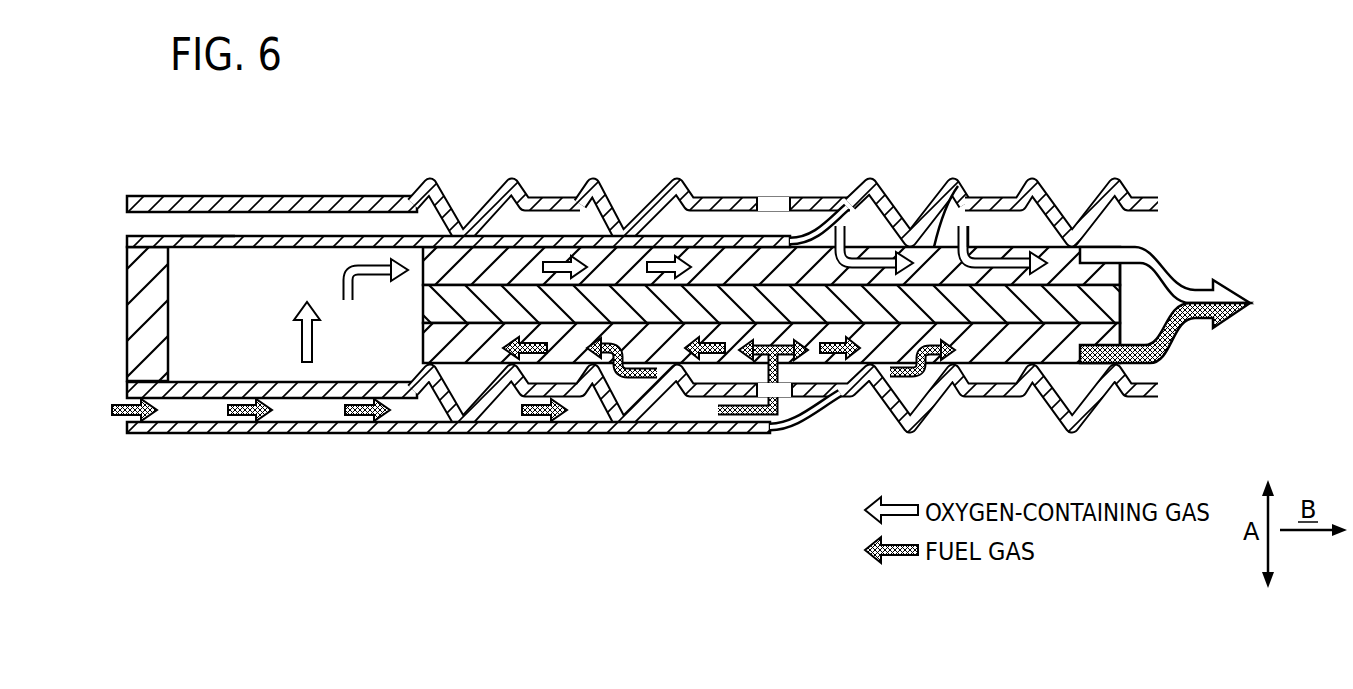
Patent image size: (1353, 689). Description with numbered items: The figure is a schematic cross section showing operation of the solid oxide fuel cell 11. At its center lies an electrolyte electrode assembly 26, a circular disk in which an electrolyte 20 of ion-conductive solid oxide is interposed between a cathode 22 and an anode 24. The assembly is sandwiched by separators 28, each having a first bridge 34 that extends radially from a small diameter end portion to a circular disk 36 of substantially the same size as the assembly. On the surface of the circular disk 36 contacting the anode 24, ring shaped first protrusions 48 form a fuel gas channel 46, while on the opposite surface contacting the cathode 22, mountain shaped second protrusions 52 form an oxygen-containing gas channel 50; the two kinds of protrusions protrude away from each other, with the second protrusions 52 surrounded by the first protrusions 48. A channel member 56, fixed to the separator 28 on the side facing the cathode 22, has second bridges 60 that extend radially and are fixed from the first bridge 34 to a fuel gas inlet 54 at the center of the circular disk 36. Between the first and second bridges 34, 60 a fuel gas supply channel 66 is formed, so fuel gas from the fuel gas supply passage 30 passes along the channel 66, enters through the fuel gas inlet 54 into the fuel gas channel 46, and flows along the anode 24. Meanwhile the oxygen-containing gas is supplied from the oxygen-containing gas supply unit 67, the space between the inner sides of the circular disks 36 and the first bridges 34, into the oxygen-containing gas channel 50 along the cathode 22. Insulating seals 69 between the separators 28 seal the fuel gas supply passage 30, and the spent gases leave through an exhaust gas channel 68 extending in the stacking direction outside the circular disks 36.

The fuel cell 11 is at (405, 110).
The electrolyte 20 is at (1003, 302).
The cathode 22 is at (1020, 268).
The anode 24 is at (1052, 443).
The electrolyte electrode assembly 26 is at (771, 367).
The separator 28 is at (677, 191).
The fuel gas supply passage 30 is at (106, 352).
The first bridge 34 is at (206, 196).
The circular disk 36 is at (995, 190).
The fuel gas channel 46 is at (846, 372).
The first protrusion 48 is at (586, 181).
The oxygen-containing gas channel 50 is at (882, 238).
The second protrusion 52 is at (961, 202).
The fuel gas inlet 54 is at (786, 397).
The channel member 56 is at (248, 252).
The second bridge 60 is at (206, 247).
The fuel gas supply channel 66 is at (262, 228).
The oxygen-containing gas supply unit 67 is at (222, 352).
The exhaust gas channel 68 is at (1178, 284).
The insulating seal 69 is at (150, 312).